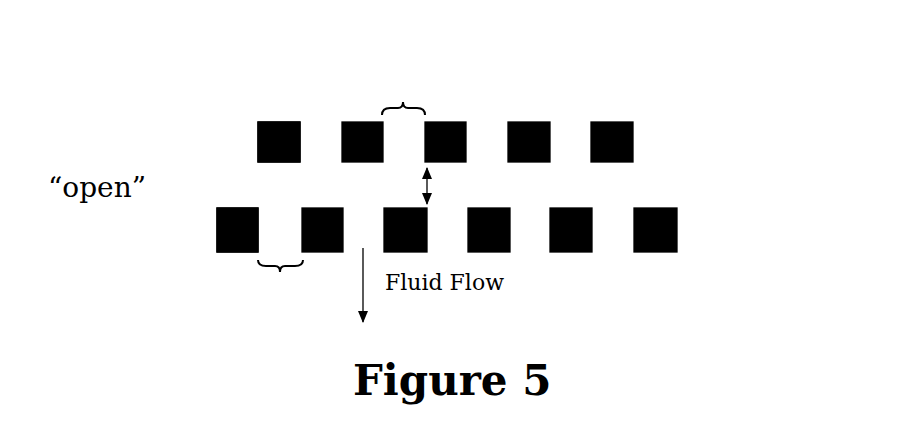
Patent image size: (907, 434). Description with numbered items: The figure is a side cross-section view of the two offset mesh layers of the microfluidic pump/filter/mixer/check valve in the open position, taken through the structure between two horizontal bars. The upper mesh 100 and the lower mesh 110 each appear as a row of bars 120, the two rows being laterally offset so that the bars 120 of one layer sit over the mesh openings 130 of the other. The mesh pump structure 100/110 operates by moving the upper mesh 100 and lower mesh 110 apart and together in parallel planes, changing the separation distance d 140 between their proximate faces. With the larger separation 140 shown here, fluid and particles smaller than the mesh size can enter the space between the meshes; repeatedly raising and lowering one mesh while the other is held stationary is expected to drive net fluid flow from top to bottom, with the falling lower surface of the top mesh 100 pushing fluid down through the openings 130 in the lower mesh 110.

The first mesh layer 100 is at (718, 245).
The second mesh layer 110 is at (666, 274).
The bars 120 is at (254, 138).
The mesh openings 130 is at (404, 94).
The separation distance d 140 is at (419, 190).